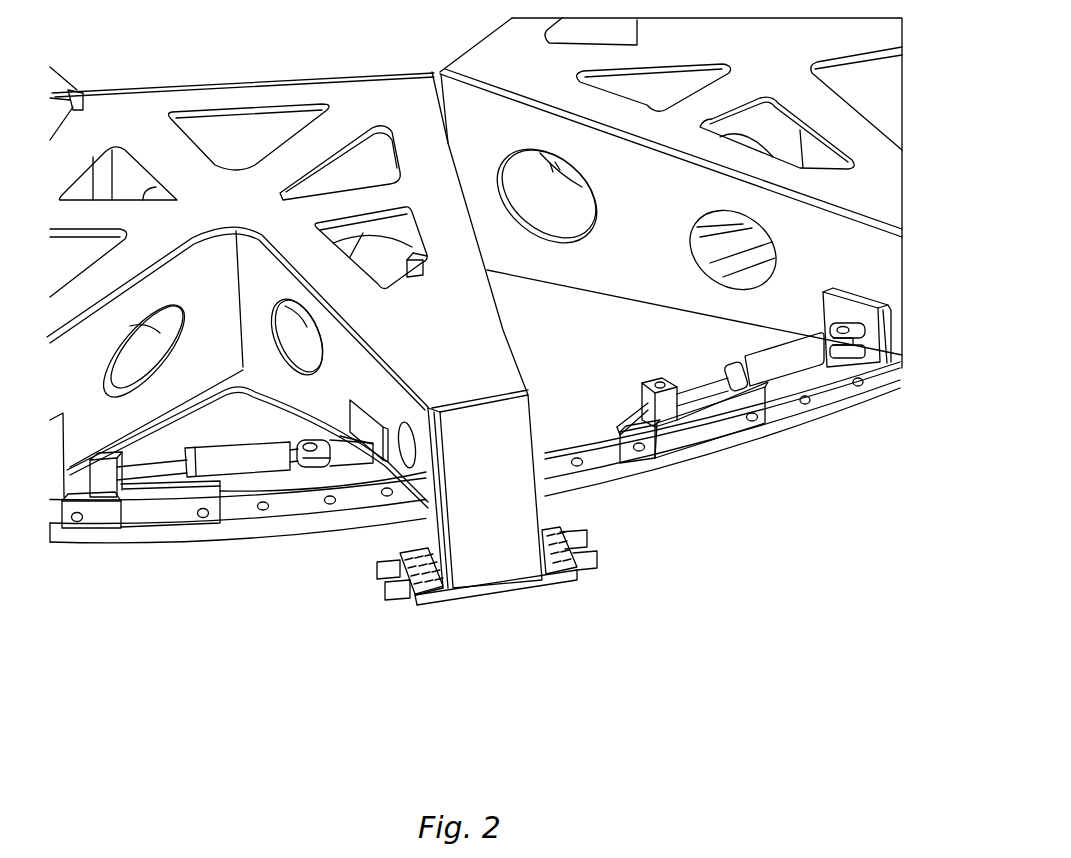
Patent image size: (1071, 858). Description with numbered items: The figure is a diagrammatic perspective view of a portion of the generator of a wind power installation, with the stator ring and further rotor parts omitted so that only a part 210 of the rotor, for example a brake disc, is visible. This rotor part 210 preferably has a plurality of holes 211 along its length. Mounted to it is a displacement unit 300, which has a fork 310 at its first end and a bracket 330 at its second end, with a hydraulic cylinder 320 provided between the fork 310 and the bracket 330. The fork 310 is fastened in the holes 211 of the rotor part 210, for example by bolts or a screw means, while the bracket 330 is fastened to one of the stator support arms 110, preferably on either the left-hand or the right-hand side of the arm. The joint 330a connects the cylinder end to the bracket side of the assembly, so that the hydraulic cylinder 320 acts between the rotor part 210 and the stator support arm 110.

The stator support arm 110 is at (493, 372).
The part of the rotor 210 is at (267, 527).
The holes 211 is at (330, 507).
The displacement unit 300 is at (720, 430).
The fork 310 is at (93, 523).
The hydraulic cylinder 320 is at (203, 457).
The bracket 330 is at (873, 357).
The clevis joint 330a is at (327, 440).